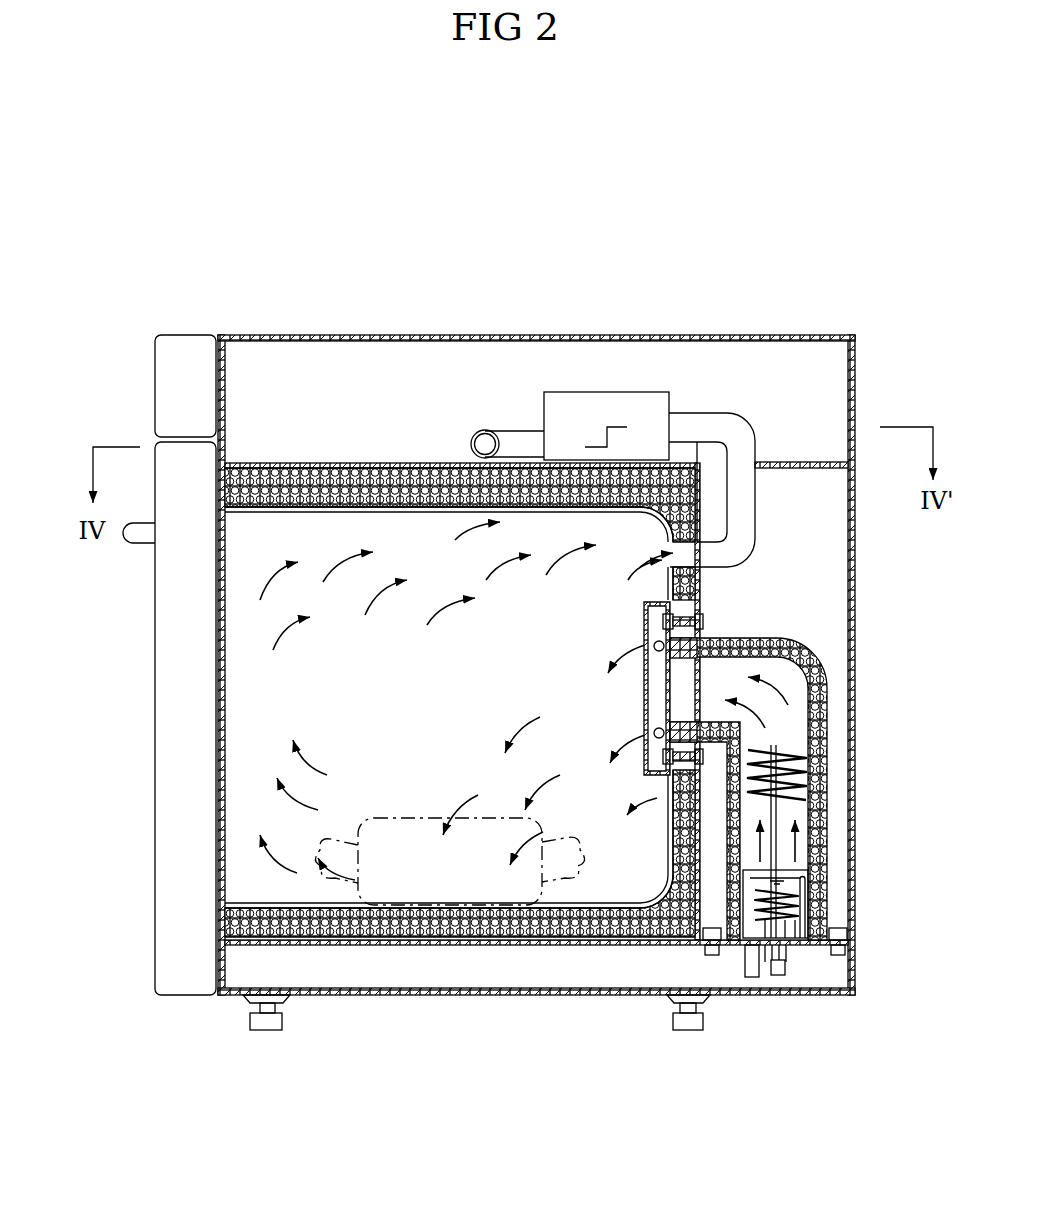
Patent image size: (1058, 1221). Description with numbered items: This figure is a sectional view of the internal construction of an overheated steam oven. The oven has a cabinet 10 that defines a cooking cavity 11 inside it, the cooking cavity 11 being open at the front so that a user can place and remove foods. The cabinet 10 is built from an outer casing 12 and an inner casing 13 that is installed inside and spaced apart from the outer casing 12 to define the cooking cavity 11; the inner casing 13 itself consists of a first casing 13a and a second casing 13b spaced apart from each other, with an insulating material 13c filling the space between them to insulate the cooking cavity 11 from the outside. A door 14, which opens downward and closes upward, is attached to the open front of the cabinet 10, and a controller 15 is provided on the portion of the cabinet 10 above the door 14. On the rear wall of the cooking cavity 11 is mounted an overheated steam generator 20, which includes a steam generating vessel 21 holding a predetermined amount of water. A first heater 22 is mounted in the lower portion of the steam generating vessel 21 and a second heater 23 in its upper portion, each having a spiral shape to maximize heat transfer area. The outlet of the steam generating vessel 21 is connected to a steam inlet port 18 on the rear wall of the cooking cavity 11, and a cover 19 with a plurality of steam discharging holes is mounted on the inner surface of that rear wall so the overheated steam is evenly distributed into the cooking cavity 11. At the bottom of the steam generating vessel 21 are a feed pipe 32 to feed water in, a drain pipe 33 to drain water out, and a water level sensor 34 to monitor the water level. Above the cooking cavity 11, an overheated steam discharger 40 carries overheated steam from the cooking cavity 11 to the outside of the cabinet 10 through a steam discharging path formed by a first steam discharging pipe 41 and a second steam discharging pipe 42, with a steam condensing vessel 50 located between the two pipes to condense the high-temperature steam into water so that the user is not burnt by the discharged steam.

The cabinet 10 is at (710, 303).
The cooking cavity 11 is at (444, 720).
The outer casing 12 is at (540, 335).
The inner casing 13 is at (531, 596).
The first casing 13a is at (428, 512).
The second casing 13b is at (410, 463).
The insulating material 13c is at (292, 463).
The door 14 is at (180, 690).
The controller 15 is at (190, 337).
The steam inlet port 18 is at (647, 737).
The cover 19 is at (643, 608).
The overheated steam generator 20 is at (827, 664).
The steam generating vessel 21 is at (822, 724).
The first heater 22 is at (810, 888).
The second heater 23 is at (806, 778).
The feed pipe 32 is at (786, 975).
The drain pipe 33 is at (752, 978).
The water level sensor 34 is at (806, 912).
The overheated steam discharger 40 is at (639, 399).
The first steam discharging pipe 41 is at (745, 428).
The second steam discharging pipe 42 is at (515, 432).
The steam condensing vessel 50 is at (622, 393).